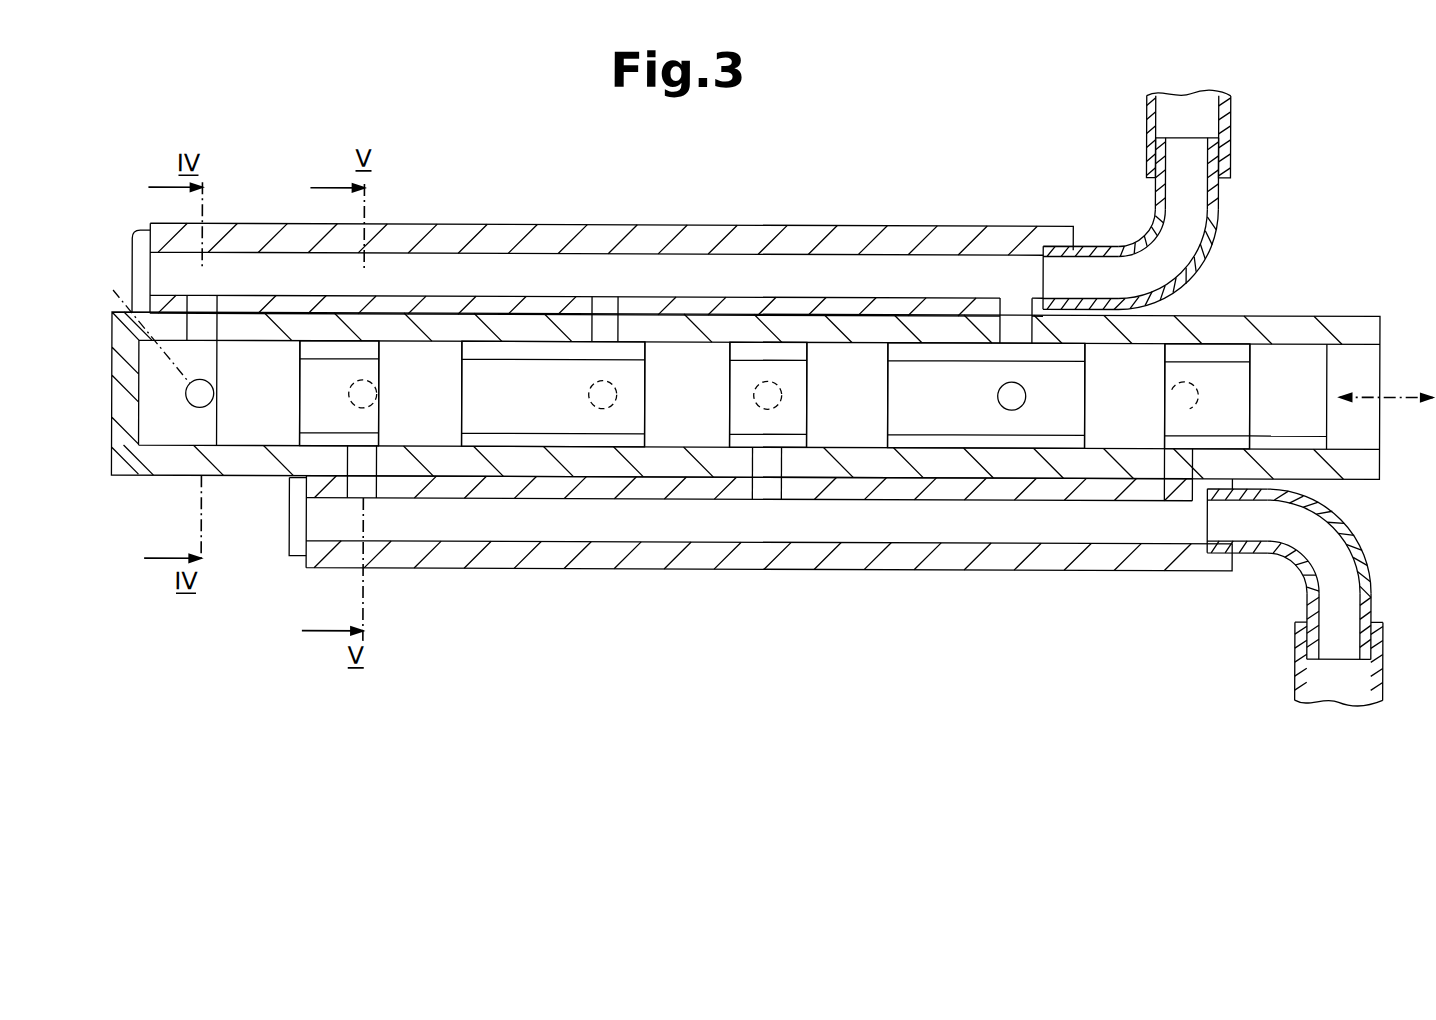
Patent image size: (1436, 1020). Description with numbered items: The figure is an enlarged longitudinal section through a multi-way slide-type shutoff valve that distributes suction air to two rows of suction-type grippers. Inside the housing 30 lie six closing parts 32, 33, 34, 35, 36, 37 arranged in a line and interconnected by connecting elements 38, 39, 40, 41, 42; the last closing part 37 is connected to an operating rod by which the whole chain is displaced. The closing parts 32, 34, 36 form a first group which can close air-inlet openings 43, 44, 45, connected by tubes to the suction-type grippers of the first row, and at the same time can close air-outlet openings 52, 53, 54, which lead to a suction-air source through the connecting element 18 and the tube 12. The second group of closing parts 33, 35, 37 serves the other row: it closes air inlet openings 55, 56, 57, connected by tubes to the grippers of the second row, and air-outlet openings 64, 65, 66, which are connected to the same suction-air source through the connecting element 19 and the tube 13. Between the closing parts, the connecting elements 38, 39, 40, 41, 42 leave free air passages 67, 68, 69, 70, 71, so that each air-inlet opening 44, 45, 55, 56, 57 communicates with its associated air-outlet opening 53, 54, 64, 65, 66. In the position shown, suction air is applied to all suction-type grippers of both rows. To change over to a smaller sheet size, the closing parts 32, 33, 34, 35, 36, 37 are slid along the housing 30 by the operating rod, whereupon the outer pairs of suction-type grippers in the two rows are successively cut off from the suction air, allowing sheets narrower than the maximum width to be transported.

The tube 12 is at (1146, 121).
The tube 13 is at (1296, 676).
The connecting element 18 is at (680, 230).
The connecting element 19 is at (880, 565).
The housing 30 is at (118, 357).
The closing part 32 is at (252, 352).
The closing part 33 is at (446, 361).
The closing part 34 is at (705, 353).
The closing part 35 is at (838, 362).
The closing part 36 is at (1103, 351).
The closing part 37 is at (1291, 359).
The connecting element 38 is at (360, 361).
The connecting element 39 is at (530, 384).
The connecting element 40 is at (783, 370).
The connecting element 41 is at (932, 377).
The connecting element 42 is at (1223, 369).
The air-inlet opening 43 is at (145, 338).
The air-inlet opening 44 is at (616, 393).
The air-inlet opening 45 is at (1000, 395).
The air-outlet opening 52 is at (198, 298).
The air-outlet opening 53 is at (605, 321).
The air-outlet opening 54 is at (1008, 322).
The air inlet opening 55 is at (372, 403).
The air inlet opening 56 is at (780, 398).
The air inlet opening 57 is at (1170, 397).
The air-outlet opening 64 is at (360, 468).
The air-outlet opening 65 is at (770, 463).
The air-outlet opening 66 is at (1182, 465).
The air passage 67 is at (298, 476).
The air passage 68 is at (513, 445).
The air passage 69 is at (738, 446).
The air passage 70 is at (1000, 446).
The air passage 71 is at (1240, 433).